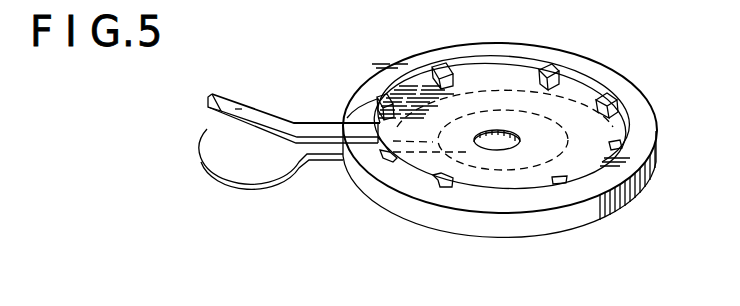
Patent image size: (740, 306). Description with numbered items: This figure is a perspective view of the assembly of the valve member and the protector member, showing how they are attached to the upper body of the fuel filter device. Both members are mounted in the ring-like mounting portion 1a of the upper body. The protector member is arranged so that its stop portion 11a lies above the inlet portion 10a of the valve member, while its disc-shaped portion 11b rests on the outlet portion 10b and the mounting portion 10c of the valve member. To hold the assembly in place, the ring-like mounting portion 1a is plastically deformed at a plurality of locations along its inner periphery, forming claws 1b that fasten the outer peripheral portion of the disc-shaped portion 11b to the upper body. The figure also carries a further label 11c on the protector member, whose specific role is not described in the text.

The ring-like mounting portion 1a is at (619, 84).
The claws 1b is at (558, 66).
The inlet portion 10a is at (266, 162).
The outlet portion 10b is at (491, 168).
The mounting portion 10c is at (481, 85).
The stop portion 11a is at (233, 103).
The disc-shaped portion 11b is at (567, 161).
The center hole 11c is at (503, 149).